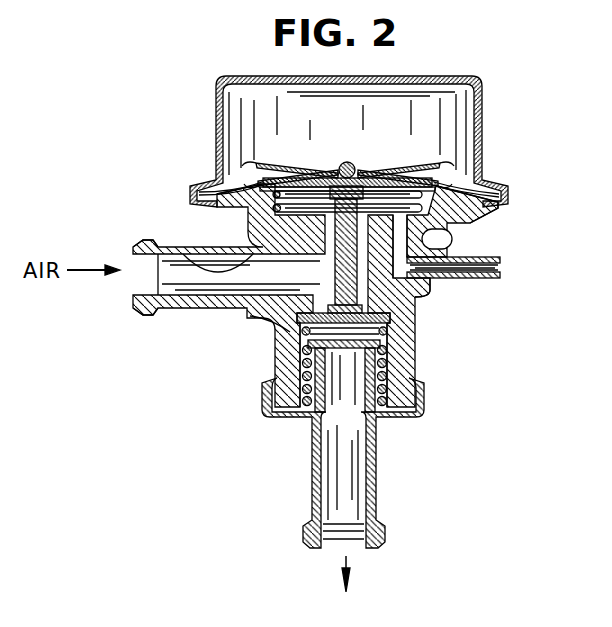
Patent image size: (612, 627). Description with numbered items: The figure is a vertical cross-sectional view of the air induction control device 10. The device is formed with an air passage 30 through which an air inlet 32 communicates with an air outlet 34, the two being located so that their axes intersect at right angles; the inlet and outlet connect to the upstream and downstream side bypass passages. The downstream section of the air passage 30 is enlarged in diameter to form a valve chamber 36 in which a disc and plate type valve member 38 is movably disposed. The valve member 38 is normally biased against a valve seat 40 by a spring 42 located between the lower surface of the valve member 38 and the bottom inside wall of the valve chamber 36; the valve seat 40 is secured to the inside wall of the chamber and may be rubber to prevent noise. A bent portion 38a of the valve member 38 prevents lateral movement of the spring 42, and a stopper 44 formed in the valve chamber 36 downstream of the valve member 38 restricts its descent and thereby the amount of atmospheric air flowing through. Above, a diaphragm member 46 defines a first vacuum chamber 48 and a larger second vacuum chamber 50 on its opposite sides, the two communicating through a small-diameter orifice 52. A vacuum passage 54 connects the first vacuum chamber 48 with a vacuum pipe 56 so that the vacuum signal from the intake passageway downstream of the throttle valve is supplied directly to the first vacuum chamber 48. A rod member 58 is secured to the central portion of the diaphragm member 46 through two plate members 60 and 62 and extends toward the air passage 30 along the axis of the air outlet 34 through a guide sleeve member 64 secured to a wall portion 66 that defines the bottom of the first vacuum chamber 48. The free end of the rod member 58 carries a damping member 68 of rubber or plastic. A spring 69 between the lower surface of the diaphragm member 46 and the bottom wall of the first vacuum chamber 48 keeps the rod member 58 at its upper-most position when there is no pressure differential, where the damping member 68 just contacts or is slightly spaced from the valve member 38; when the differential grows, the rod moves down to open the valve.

The air induction control device 10 is at (208, 96).
The air passage 30 is at (414, 306).
The air inlet 32 is at (138, 309).
The air outlet 34 is at (385, 531).
The valve chamber 36 is at (300, 398).
The valve member 38 is at (300, 341).
The bent portion 38a is at (388, 343).
The valve seat 40 is at (297, 327).
The spring 42 is at (420, 391).
The stopper 44 is at (388, 355).
The diaphragm member 46 is at (447, 188).
The first vacuum chamber 48 is at (468, 219).
The second vacuum chamber 50 is at (452, 120).
The orifice 52 is at (406, 166).
The vacuum passage 54 is at (395, 240).
The vacuum pipe 56 is at (498, 280).
The rod member 58 is at (340, 290).
The plate member 60 is at (260, 167).
The plate member 62 is at (308, 166).
The guide sleeve member 64 is at (421, 293).
The wall portion 66 is at (183, 252).
The damping member 68 is at (250, 315).
The spring 69 is at (272, 207).